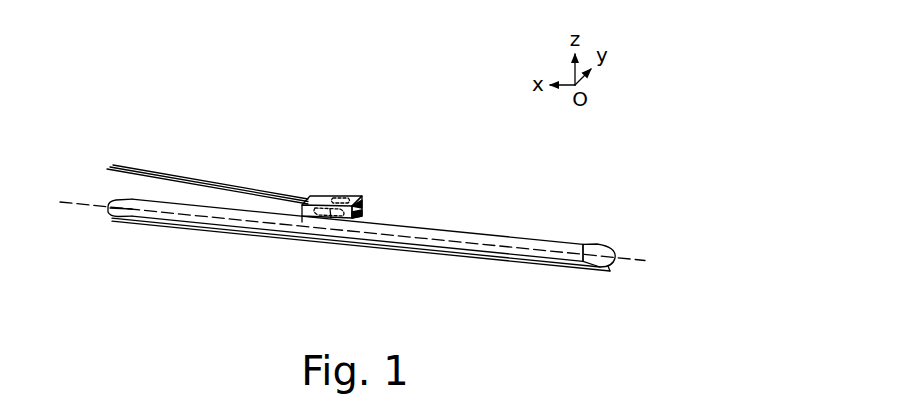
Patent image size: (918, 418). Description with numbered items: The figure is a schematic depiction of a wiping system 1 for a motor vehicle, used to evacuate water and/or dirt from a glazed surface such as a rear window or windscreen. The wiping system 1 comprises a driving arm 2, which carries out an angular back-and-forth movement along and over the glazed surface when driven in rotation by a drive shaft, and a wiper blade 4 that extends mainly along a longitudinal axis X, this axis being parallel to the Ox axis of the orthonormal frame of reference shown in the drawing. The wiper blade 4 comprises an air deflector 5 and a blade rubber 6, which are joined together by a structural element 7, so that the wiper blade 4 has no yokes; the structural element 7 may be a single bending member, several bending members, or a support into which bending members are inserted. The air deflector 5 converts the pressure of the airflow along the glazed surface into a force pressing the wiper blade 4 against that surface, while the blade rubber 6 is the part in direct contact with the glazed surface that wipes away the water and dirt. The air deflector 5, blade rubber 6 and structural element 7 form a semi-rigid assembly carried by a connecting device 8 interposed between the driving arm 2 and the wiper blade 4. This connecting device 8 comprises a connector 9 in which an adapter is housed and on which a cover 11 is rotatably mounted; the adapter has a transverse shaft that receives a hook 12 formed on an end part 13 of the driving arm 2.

The wiping system 1 is at (103, 88).
The driving arm 2 is at (176, 170).
The wiper blade 4 is at (577, 212).
The air deflector 5 is at (474, 230).
The blade rubber 6 is at (431, 255).
The structural element 7 is at (531, 258).
The connecting device 8 is at (353, 190).
The connector 9 is at (301, 217).
The cover 11 is at (378, 200).
The hook 12 is at (324, 237).
The end part 13 is at (322, 192).
The longitudinal axis X is at (83, 202).